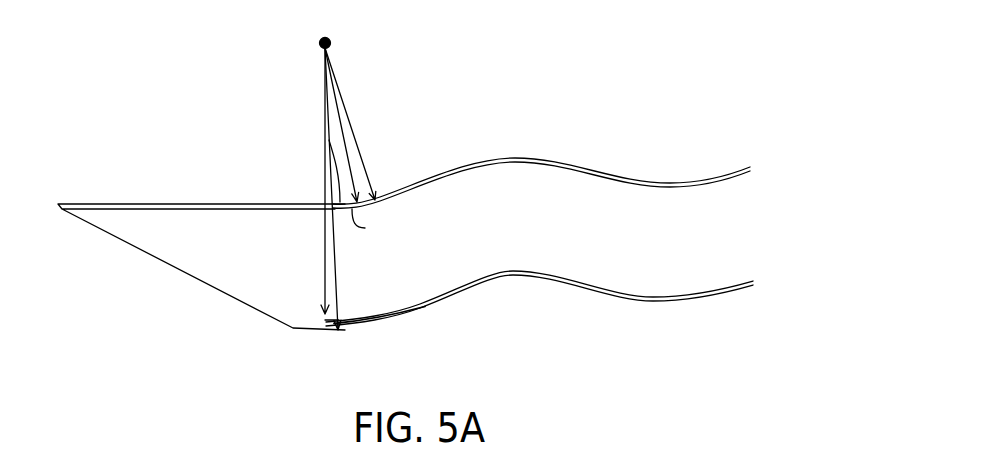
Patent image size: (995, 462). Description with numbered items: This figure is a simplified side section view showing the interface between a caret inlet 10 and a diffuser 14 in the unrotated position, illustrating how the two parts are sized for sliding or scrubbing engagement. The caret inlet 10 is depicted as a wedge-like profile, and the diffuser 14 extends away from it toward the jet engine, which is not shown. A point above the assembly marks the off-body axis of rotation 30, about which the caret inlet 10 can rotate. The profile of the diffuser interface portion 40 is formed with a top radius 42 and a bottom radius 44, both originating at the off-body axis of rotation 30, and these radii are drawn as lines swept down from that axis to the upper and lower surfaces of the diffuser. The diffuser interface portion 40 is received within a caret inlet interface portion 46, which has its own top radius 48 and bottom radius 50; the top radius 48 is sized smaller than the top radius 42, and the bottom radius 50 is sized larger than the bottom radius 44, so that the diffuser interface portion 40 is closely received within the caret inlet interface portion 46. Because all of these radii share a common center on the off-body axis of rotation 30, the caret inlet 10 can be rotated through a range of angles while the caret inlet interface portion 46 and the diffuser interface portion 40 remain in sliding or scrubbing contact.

The caret inlet 10 is at (85, 203).
The diffuser 14 is at (545, 158).
The off-body axis of rotation 30 is at (331, 38).
The diffuser interface portion 40 is at (365, 228).
The top radius 42 is at (348, 113).
The bottom radius 44 is at (323, 270).
The caret inlet interface portion 46 is at (329, 140).
The top radius 48 is at (349, 175).
The bottom radius 50 is at (338, 297).